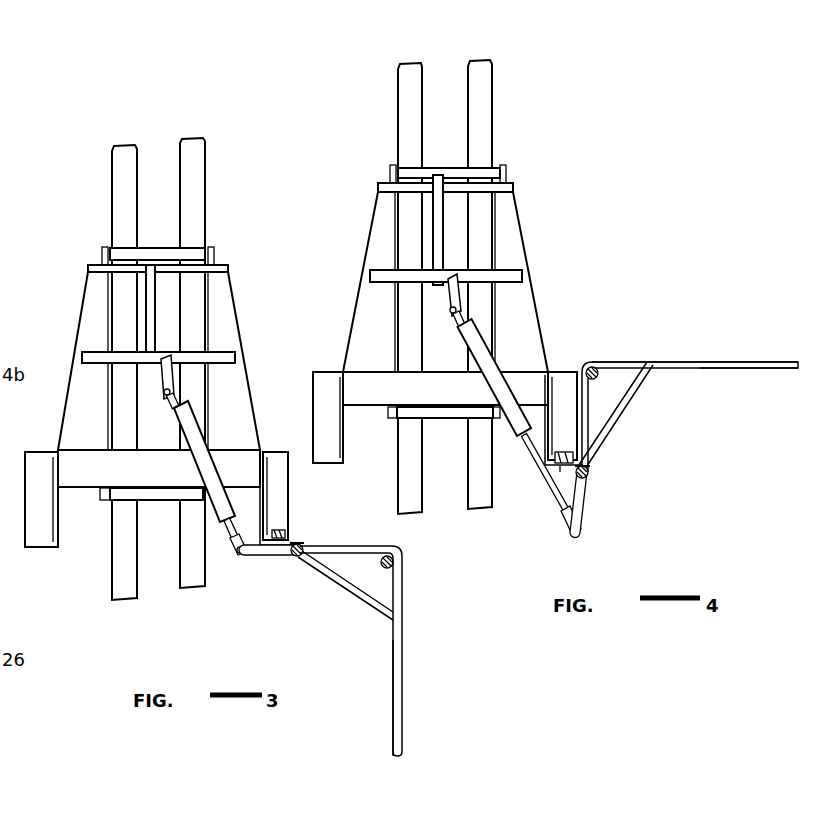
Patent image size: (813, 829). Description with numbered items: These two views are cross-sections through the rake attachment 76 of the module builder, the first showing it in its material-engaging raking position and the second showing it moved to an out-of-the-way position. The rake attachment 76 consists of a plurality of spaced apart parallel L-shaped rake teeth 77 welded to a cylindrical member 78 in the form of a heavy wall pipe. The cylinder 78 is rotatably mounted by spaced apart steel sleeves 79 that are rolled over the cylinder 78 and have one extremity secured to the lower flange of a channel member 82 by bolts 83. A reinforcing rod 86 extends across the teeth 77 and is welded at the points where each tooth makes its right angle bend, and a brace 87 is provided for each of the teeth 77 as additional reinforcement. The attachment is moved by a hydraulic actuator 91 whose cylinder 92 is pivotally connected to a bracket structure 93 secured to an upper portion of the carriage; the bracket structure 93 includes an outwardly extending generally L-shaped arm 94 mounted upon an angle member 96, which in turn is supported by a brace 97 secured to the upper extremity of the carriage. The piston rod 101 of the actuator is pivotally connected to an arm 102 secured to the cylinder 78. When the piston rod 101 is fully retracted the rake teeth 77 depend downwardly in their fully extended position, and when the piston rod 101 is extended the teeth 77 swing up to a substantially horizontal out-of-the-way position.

In FIG. 3, the rake attachment 76 is at (410, 622).
In FIG. 4, the rake attachment 76 is at (683, 361).
In FIG. 3, the rake teeth 77 is at (400, 682).
In FIG. 4, the rake teeth 77 is at (752, 361).
In FIG. 3, the cylindrical member 78 is at (297, 560).
In FIG. 4, the cylindrical member 78 is at (590, 470).
In FIG. 3, the sleeves 79 is at (300, 545).
In FIG. 4, the sleeves 79 is at (591, 475).
In FIG. 3, the channel member 82 is at (281, 493).
In FIG. 4, the channel member 82 is at (565, 415).
In FIG. 3, the bolts 83 is at (284, 530).
In FIG. 4, the bolts 83 is at (572, 452).
In FIG. 3, the reinforcing rod 86 is at (393, 560).
In FIG. 4, the reinforcing rod 86 is at (593, 367).
In FIG. 3, the braces 87 is at (367, 602).
In FIG. 4, the braces 87 is at (637, 395).
In FIG. 3, the hydraulic actuator 91 is at (228, 438).
In FIG. 4, the hydraulic actuator 91 is at (524, 374).
In FIG. 3, the cylinder 92 is at (186, 430).
In FIG. 4, the cylinder 92 is at (492, 372).
In FIG. 3, the bracket structure 93 is at (220, 346).
In FIG. 4, the bracket structure 93 is at (508, 263).
In FIG. 3, the L-shaped arm 94 is at (173, 372).
In FIG. 4, the L-shaped arm 94 is at (457, 298).
In FIG. 3, the angle member 96 is at (225, 356).
In FIG. 4, the angle member 96 is at (522, 275).
In FIG. 3, the brace 97 is at (153, 312).
In FIG. 4, the brace 97 is at (444, 240).
In FIG. 3, the piston rod 101 is at (240, 530).
In FIG. 4, the piston rod 101 is at (555, 495).
In FIG. 3, the arm 102 is at (262, 560).
In FIG. 4, the arm 102 is at (585, 510).